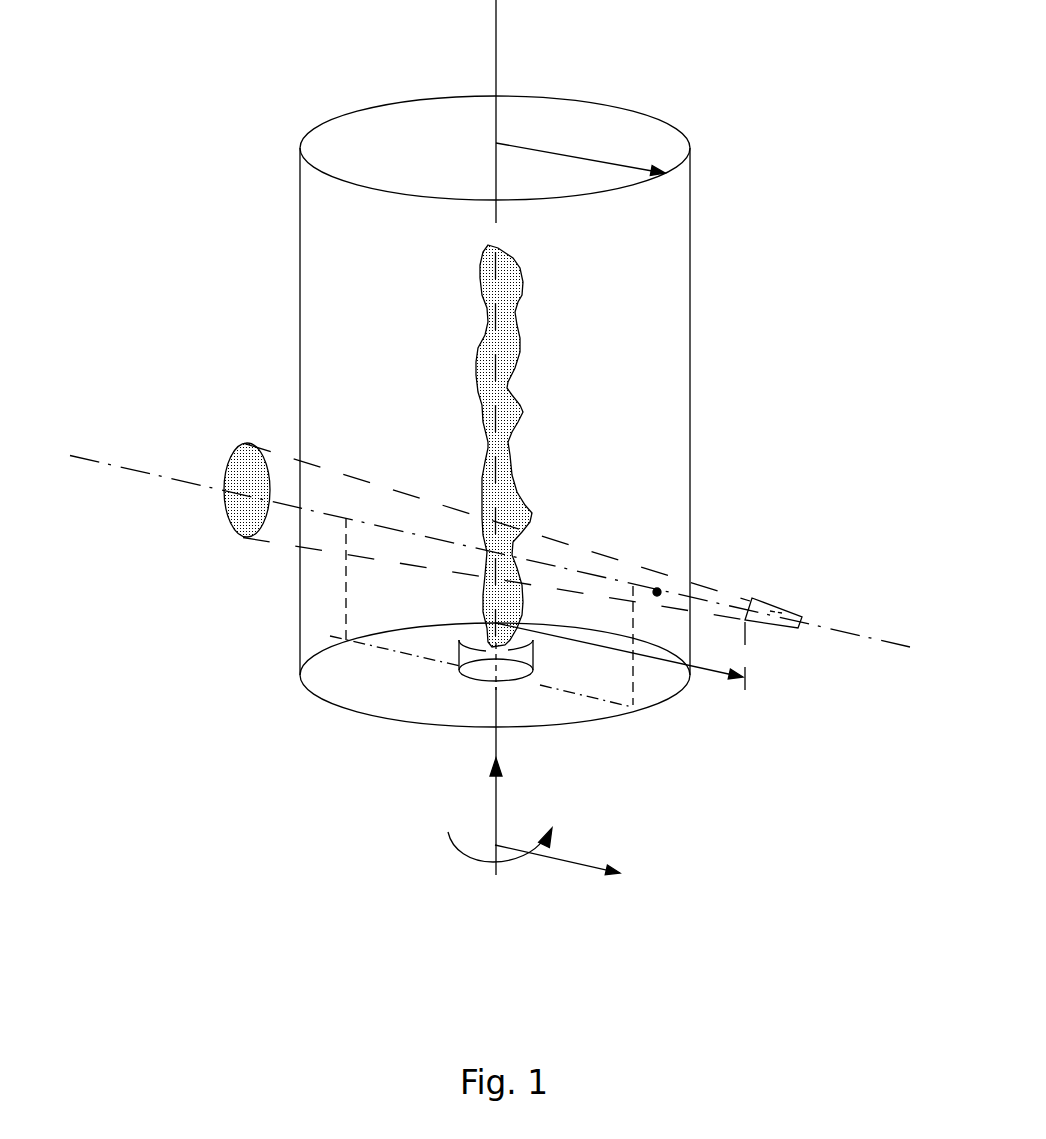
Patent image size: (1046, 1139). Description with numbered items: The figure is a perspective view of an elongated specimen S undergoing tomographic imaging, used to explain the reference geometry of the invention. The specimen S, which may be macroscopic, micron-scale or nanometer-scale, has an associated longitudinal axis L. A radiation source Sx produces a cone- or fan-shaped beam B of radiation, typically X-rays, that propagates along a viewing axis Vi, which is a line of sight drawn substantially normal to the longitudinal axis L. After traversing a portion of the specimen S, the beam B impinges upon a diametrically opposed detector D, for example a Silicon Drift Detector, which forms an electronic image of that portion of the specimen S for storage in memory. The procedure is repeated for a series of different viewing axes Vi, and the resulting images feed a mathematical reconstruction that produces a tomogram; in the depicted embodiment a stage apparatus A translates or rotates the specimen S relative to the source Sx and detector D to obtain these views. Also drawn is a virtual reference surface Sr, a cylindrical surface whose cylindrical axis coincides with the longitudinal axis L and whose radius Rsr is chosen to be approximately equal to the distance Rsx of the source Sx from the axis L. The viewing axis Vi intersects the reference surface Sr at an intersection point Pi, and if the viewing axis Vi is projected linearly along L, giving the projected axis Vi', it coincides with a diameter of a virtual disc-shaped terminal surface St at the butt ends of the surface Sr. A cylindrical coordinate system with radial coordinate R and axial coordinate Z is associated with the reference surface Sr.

The longitudinal axis L is at (496, 22).
The terminal surface St is at (343, 130).
The virtual reference surface Sr is at (700, 228).
The radius of reference surface Rsr is at (608, 160).
The specimen S is at (513, 300).
The detector D is at (235, 508).
The beam B is at (346, 498).
The intersection point Pi is at (657, 592).
The viewing axis Vi is at (815, 592).
The radiation source Sx is at (765, 625).
The distance of source from axis Rsx is at (703, 668).
The stage apparatus A is at (518, 677).
The projected source position Vi' is at (481, 720).
The Z coordinate Z is at (482, 781).
The R coordinate R is at (557, 878).